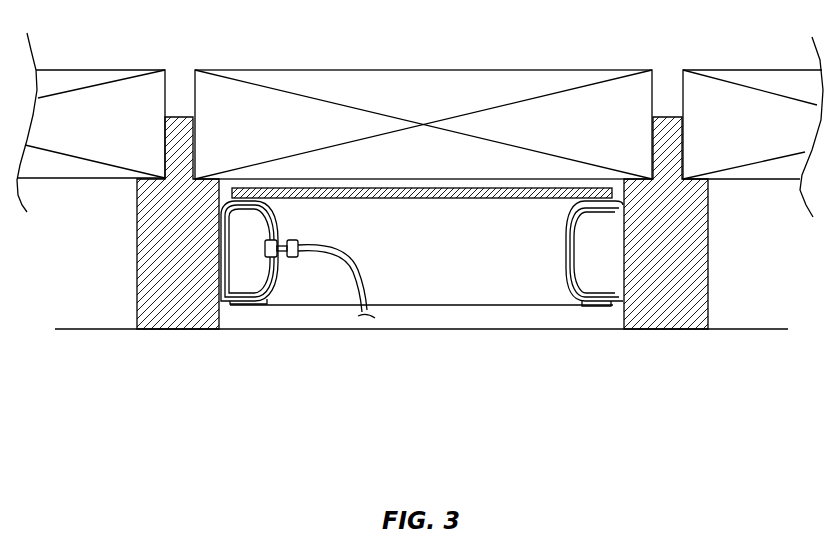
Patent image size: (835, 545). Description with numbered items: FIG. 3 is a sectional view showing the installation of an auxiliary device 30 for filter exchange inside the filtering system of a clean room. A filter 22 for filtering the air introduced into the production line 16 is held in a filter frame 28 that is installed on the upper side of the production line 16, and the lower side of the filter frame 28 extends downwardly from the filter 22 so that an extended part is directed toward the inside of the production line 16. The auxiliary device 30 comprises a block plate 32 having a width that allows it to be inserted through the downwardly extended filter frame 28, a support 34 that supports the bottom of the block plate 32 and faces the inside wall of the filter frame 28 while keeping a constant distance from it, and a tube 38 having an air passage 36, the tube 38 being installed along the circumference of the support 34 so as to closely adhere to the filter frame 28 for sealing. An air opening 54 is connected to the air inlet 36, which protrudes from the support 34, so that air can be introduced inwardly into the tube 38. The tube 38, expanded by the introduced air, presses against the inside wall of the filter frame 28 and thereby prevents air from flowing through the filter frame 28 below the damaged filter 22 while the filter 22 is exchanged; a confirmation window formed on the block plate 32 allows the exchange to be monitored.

The production line 16 is at (705, 414).
The filter 22 is at (377, 70).
The filter frame 28 is at (708, 238).
The auxiliary device for filter exchange 30 is at (486, 310).
The block plate 32 is at (458, 190).
The support 34 is at (268, 295).
The air passage 36 is at (276, 258).
The tube 38 is at (265, 214).
The air opening 54 is at (303, 252).